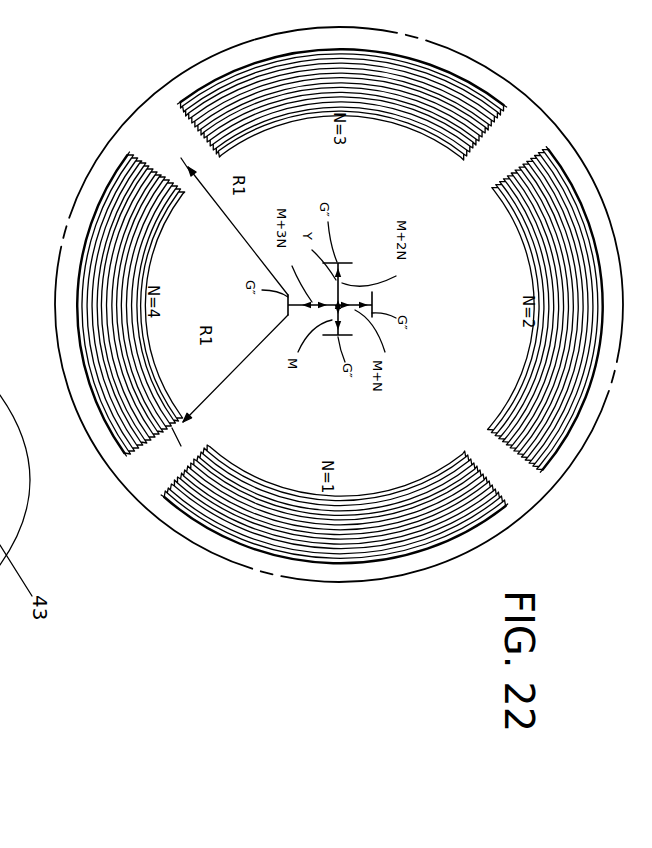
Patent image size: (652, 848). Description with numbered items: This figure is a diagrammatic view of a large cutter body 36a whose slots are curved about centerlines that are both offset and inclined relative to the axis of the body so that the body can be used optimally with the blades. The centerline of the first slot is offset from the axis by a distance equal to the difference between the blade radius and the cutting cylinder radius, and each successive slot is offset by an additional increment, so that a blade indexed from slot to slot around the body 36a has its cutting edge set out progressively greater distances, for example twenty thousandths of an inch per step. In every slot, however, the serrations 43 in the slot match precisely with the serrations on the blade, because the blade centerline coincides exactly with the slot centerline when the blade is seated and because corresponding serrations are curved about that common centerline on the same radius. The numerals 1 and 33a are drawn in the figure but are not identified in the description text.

The stator housing outline 1 is at (593, 427).
The serrations in the slots 43 is at (556, 204).
The coil section 33a is at (396, 96).
The large cutter body 36a is at (503, 468).